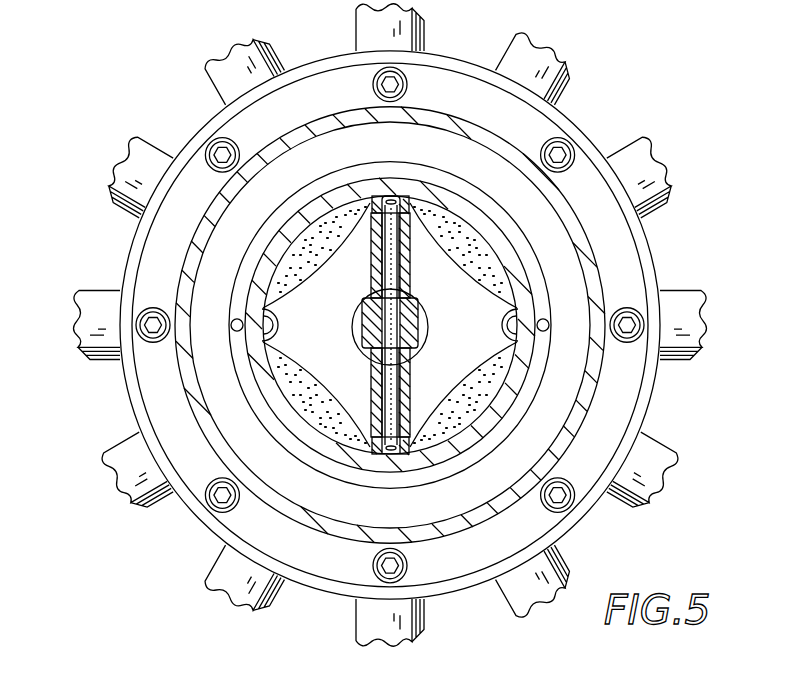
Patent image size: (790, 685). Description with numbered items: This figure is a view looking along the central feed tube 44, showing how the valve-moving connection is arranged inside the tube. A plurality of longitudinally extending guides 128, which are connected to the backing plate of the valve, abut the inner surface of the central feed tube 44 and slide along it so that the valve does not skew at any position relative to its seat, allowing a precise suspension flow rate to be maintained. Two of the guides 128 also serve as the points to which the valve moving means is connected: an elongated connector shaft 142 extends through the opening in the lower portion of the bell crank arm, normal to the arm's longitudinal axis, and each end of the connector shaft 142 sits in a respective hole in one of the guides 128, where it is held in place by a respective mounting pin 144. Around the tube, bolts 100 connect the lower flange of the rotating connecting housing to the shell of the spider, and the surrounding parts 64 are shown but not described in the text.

The central feed tube 44 is at (337, 190).
The bumper pad 64 is at (227, 68).
The bolts 100 is at (375, 76).
The guides 128 is at (372, 204).
The connector shaft 142 is at (385, 282).
The mounting pin 144 is at (396, 195).